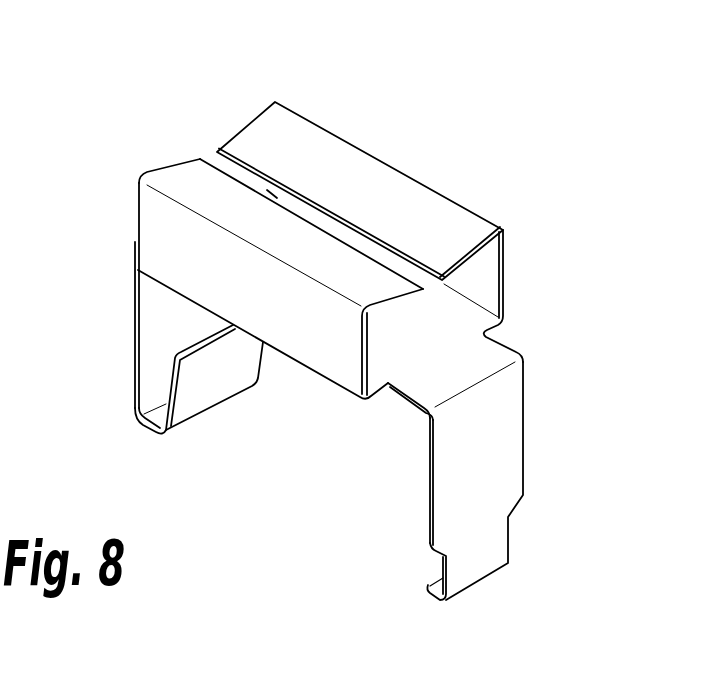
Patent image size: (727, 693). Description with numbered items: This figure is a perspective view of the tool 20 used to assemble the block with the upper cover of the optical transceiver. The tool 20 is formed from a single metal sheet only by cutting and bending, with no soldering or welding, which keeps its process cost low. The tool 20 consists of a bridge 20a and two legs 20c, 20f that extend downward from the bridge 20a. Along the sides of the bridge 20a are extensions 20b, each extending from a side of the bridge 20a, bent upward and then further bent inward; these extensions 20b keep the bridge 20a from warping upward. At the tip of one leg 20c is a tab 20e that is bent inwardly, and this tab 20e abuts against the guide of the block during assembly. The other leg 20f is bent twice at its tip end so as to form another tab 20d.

The tool 20 is at (392, 143).
The bridge 20a is at (488, 360).
The extension 20b is at (312, 338).
The leg 20c is at (507, 453).
The tab 20d is at (170, 373).
The tab 20e is at (426, 590).
The leg 20f is at (132, 292).